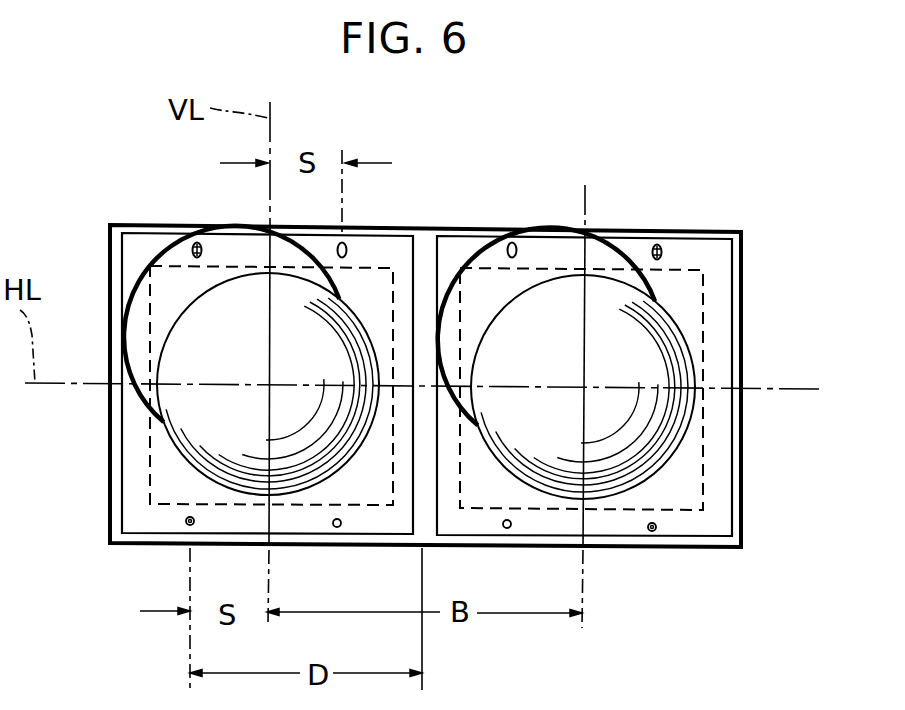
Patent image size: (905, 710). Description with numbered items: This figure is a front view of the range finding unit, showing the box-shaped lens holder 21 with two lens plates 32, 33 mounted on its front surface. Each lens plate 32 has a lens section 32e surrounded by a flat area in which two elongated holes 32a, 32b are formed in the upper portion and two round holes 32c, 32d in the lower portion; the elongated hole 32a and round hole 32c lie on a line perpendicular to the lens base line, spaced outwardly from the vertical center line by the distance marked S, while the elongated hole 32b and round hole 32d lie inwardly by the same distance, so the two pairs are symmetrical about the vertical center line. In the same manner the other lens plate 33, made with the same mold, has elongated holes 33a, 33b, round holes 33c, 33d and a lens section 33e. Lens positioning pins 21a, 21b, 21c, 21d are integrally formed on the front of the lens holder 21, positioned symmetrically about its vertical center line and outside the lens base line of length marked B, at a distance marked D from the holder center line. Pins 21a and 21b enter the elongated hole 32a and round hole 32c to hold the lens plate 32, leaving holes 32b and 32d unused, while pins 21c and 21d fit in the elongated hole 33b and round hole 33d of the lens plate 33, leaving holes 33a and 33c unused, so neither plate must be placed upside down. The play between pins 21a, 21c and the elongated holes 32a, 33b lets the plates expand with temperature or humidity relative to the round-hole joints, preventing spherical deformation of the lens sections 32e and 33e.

The lens holder 21 is at (777, 517).
The lens positioning pin 21a is at (192, 250).
The lens positioning pin 21b is at (186, 521).
The lens positioning pin 21c is at (652, 248).
The lens positioning pin 21d is at (648, 528).
The lens plate 32 is at (118, 434).
The elongated hole 32a is at (197, 243).
The elongated hole 32b is at (348, 251).
The round hole 32c is at (188, 525).
The round hole 32d is at (340, 527).
The lens section 32e is at (198, 327).
The lens plate 33 is at (735, 446).
The elongated hole 33a is at (512, 243).
The elongated hole 33b is at (660, 258).
The round hole 33c is at (509, 528).
The round hole 33d is at (657, 530).
The lens section 33e is at (652, 347).